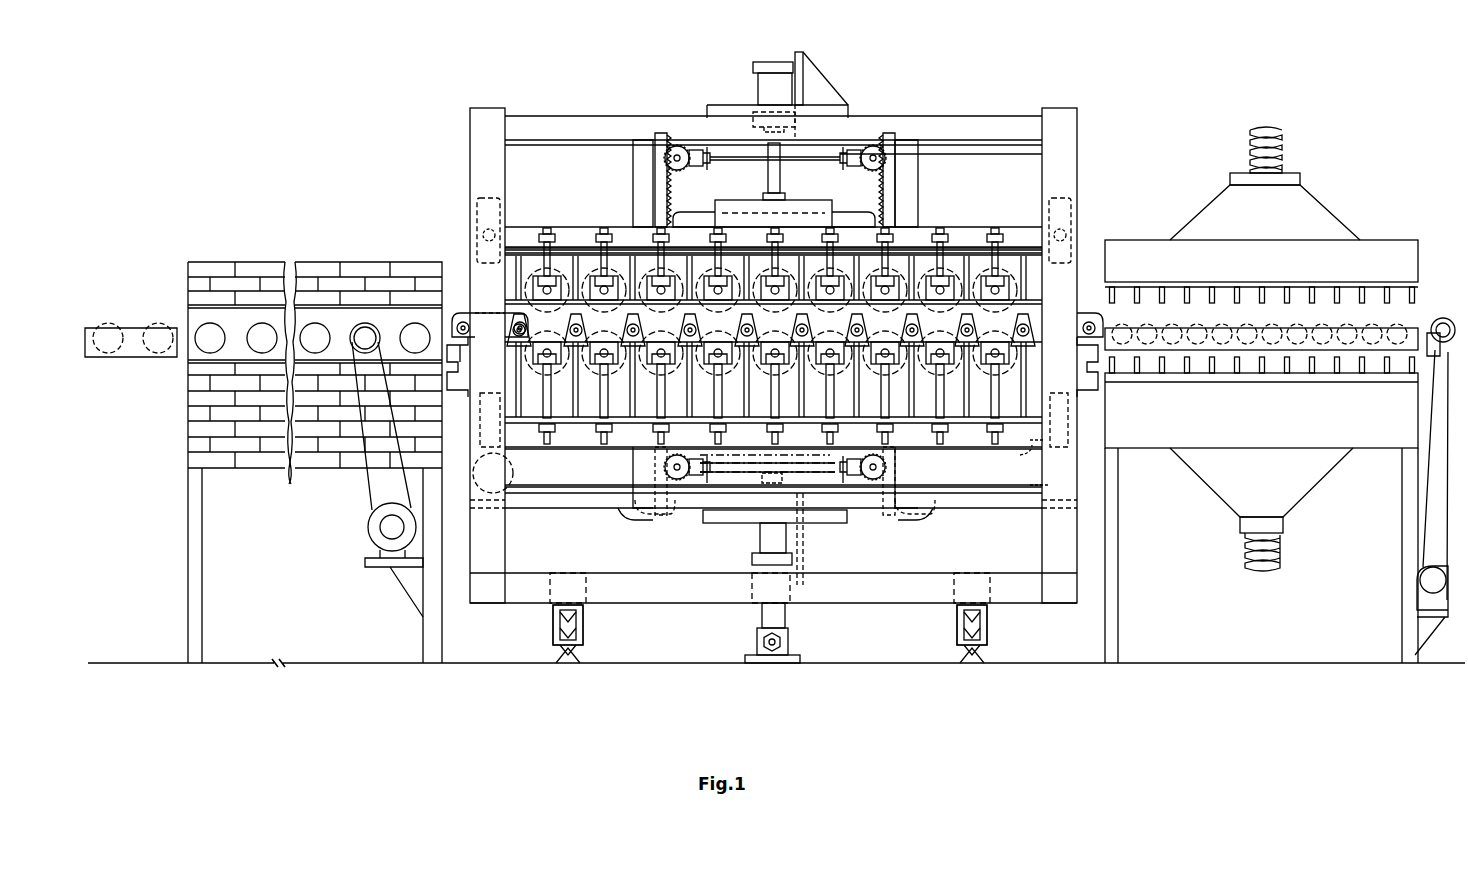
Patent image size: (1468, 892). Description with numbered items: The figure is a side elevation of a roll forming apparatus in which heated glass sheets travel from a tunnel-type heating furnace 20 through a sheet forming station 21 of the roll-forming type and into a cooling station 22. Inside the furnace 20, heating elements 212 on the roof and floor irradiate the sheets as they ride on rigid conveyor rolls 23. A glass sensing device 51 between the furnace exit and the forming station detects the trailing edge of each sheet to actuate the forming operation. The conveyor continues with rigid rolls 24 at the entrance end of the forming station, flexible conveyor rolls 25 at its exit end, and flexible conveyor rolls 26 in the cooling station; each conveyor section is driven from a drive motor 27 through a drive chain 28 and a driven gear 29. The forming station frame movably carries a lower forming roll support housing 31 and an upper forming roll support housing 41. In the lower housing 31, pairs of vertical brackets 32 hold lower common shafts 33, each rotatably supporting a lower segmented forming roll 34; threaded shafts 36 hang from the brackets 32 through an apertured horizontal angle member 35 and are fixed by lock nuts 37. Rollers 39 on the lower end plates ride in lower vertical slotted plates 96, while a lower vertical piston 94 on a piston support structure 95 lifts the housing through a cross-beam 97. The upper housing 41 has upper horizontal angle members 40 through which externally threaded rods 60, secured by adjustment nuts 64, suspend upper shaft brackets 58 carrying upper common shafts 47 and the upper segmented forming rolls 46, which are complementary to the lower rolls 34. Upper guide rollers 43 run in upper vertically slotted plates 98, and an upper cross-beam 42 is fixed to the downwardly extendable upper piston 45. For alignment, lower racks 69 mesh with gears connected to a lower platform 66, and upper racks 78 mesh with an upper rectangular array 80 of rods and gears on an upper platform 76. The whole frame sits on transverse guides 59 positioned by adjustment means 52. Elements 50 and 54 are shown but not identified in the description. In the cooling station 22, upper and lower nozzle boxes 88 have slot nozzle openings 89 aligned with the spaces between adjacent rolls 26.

The tunnel-type heating furnace 20 is at (251, 215).
The sheet forming station 21 is at (629, 73).
The cooling station 22 is at (1200, 157).
The conveyor rolls 23 is at (272, 334).
The additional rolls 24 is at (502, 309).
The additional conveyor rolls 25 is at (805, 336).
The additional conveyor rolls 26 is at (1286, 326).
The drive motor 27 is at (383, 528).
The drive chain 28 is at (373, 485).
The driven gear 29 is at (360, 326).
The lower forming roll support housing 31 is at (612, 458).
The vertical brackets 32 is at (533, 353).
The lower common shafts 33 is at (615, 330).
The lower segmented forming rolls 34 is at (688, 331).
The horizontal angle member 35 is at (782, 423).
The threaded shafts 36 is at (664, 415).
The lock nuts 37 is at (578, 445).
The roller 39 is at (1037, 451).
The upper horizontal angle members 40 is at (565, 245).
The upper forming roll support housing 41 is at (577, 209).
The upper cross-beam 42 is at (745, 202).
The upper guide rollers 43 is at (478, 216).
The upper piston 45 is at (764, 93).
The upper segmented forming rolls 46 is at (975, 336).
The upper common shaft 47 is at (1036, 300).
The leveling foot 50 is at (592, 634).
The glass sensing device 51 is at (460, 390).
The adjustment means 52 is at (796, 632).
The support bracket 54 is at (825, 108).
The upper shaft brackets 58 is at (860, 336).
The transverse guides 59 is at (553, 654).
The externally threaded rods 60 is at (883, 255).
The adjustment nuts 64 is at (964, 249).
The lower platform 66 is at (812, 476).
The lower racks 69 is at (662, 520).
The upper platform 76 is at (934, 144).
The upper racks 78 is at (670, 172).
The upper rectangular array 80 is at (829, 164).
The nozzle boxes 88 is at (1370, 238).
The slot nozzle openings 89 is at (1199, 294).
The lower vertical piston 94 is at (765, 545).
The piston support structure 95 is at (805, 580).
The lower vertical slotted plates 96 is at (1048, 484).
The cross-beam 97 is at (848, 453).
The upper vertically slotted plates 98 is at (478, 232).
The heating elements 212 is at (227, 311).